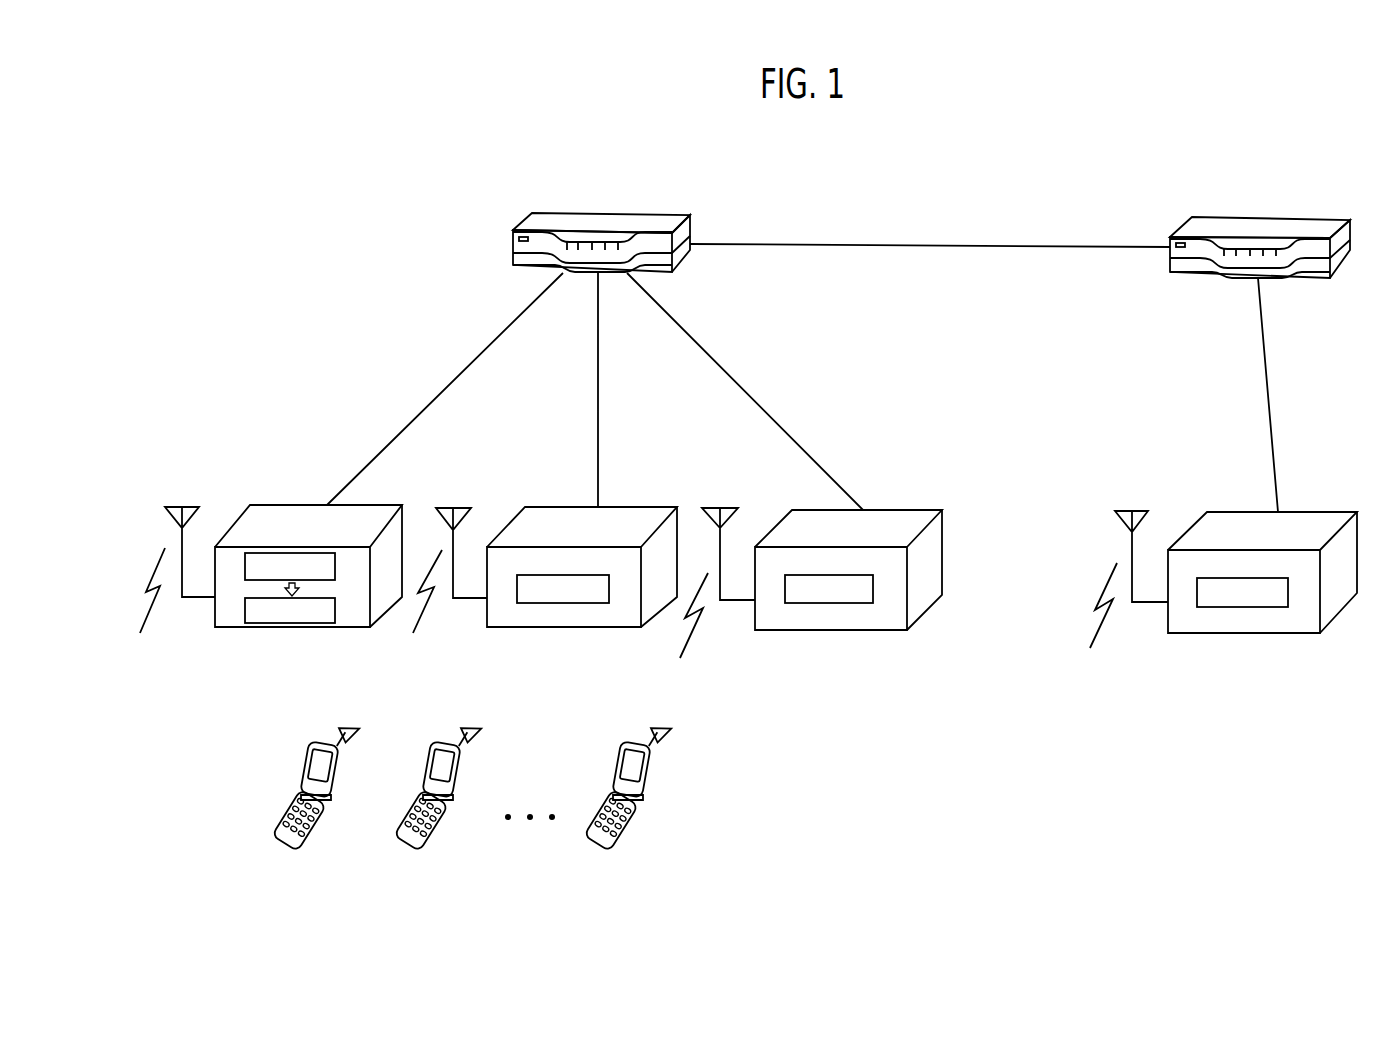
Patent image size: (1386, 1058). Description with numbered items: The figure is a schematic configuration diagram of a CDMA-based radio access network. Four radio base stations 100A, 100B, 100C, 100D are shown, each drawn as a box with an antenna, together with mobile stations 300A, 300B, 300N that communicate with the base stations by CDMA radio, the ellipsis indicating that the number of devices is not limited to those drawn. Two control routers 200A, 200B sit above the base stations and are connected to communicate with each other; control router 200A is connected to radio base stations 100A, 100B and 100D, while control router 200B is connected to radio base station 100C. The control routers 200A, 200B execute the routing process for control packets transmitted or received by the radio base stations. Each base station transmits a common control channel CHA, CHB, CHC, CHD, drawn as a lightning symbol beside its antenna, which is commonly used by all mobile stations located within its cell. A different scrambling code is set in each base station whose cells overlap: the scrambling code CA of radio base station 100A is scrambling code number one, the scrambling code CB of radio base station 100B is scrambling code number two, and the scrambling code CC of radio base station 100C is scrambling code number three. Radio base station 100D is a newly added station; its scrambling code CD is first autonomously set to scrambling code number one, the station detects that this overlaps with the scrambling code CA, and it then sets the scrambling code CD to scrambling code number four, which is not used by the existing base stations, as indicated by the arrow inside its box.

The control router 200A is at (613, 212).
The control router 200B is at (1272, 217).
The radio base station 100A is at (627, 505).
The radio base station 100B is at (893, 508).
The radio base station 100C is at (1307, 512).
The radio base station 100D is at (282, 505).
The mobile station 300A is at (322, 738).
The mobile station 300B is at (444, 738).
The mobile station 300N is at (634, 738).
The common control channel CHA is at (422, 625).
The common control channel CHB is at (692, 648).
The common control channel CHC is at (1100, 638).
The common control channel CHD is at (143, 625).
The scrambling code CA is at (600, 603).
The scrambling code CB is at (870, 603).
The scrambling code CC is at (1280, 607).
The scrambling code CD is at (335, 570).